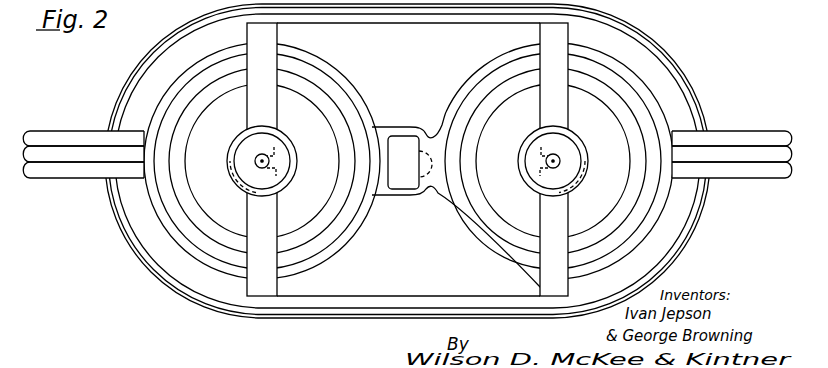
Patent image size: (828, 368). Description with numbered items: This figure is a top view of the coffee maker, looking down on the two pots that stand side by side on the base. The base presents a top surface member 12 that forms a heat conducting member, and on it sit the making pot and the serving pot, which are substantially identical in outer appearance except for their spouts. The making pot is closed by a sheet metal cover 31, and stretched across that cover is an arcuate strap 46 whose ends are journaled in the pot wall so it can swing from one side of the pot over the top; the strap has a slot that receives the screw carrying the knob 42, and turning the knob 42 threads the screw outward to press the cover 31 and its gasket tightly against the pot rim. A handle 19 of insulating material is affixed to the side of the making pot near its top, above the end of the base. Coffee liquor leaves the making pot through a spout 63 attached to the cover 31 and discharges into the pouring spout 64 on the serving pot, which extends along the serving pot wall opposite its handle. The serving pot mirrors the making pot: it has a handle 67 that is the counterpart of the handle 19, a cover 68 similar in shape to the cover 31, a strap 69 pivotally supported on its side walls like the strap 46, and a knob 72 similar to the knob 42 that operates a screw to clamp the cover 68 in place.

The top surface member 12 is at (407, 161).
The handle 19 is at (747, 137).
The cover 31 is at (636, 212).
The knob 42 is at (565, 152).
The strap 46 is at (562, 47).
The spout 63 is at (406, 150).
The pouring spout 64 is at (416, 199).
The handle 67 is at (49, 135).
The cover 68 is at (200, 201).
The strap 69 is at (247, 295).
The knob 72 is at (251, 181).